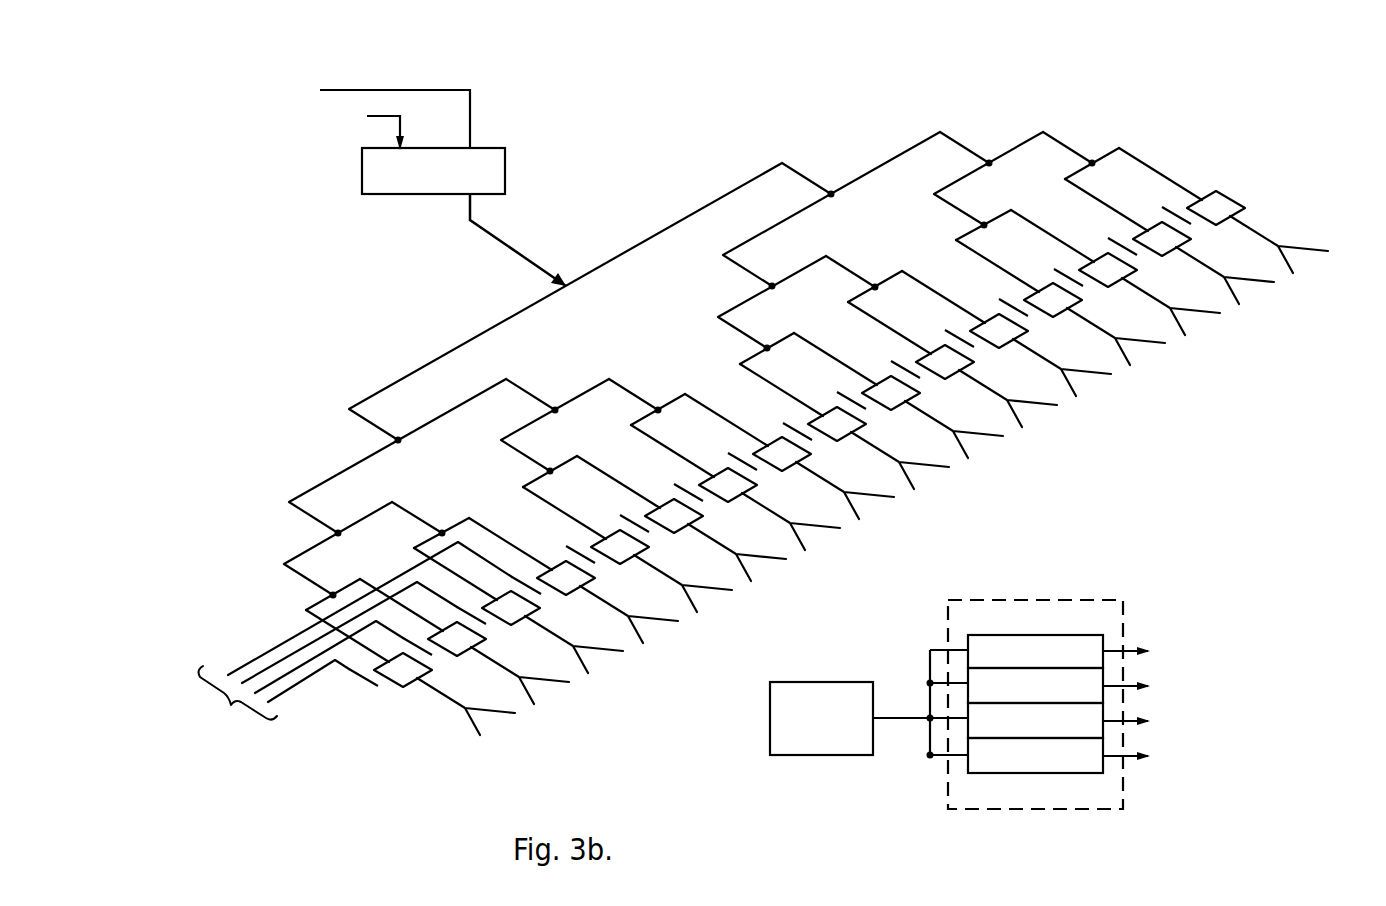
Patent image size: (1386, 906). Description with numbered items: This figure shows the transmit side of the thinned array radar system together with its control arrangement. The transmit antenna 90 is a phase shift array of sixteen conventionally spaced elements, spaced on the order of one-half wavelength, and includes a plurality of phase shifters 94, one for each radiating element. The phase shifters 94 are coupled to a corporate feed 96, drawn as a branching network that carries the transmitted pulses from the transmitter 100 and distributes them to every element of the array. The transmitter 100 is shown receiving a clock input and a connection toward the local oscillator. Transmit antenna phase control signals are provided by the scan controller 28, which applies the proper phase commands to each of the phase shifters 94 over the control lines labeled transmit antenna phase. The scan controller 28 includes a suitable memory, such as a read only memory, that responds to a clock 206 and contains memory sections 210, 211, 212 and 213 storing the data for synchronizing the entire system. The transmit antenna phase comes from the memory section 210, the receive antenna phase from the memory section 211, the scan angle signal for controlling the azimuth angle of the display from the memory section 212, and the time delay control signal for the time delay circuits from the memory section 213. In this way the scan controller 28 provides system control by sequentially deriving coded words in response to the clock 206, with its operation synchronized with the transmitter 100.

The transmit antenna 90 is at (935, 487).
The phase shifters 94 is at (1226, 201).
The corporate feed 96 is at (512, 242).
The transmitter 100 is at (505, 160).
The clock 206 is at (810, 688).
The scan controller 28 is at (1107, 692).
The memory section 210 is at (1035, 651).
The memory section 211 is at (1035, 685).
The memory section 212 is at (1035, 720).
The memory section 213 is at (1035, 755).